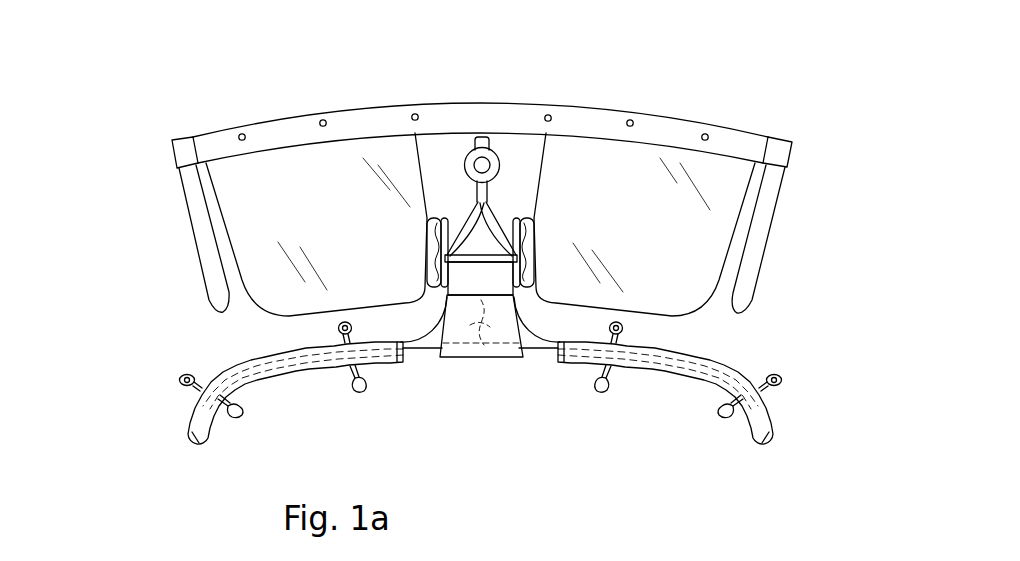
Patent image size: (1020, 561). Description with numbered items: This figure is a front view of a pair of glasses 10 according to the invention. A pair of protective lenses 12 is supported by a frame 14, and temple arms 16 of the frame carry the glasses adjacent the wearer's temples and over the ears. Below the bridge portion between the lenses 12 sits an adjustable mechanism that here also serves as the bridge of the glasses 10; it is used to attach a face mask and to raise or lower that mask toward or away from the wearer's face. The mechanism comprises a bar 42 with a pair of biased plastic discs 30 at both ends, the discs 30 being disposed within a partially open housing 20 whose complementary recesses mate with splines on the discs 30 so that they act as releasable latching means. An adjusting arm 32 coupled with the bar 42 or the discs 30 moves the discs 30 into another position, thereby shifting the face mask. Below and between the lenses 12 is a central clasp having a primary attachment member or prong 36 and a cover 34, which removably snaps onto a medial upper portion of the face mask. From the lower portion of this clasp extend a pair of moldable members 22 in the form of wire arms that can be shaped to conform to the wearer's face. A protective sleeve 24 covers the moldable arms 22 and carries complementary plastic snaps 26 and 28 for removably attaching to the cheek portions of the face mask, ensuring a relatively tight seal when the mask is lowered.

The pair of glasses 10 is at (174, 80).
The protective lenses 12 is at (339, 225).
The frame 14 is at (672, 122).
The temple arms 16 is at (198, 222).
The partially open housing 20 is at (427, 216).
The moldable members 22 is at (176, 446).
The protective sleeve 24 is at (186, 417).
The plastic snaps 26 is at (245, 415).
The plastic snaps 28 is at (181, 377).
The biased plastic discs 30 is at (444, 217).
The adjusting arm 32 is at (489, 148).
The cover 34 is at (467, 358).
The primary attachment member/prong 36 is at (491, 355).
The bar 42 is at (468, 255).